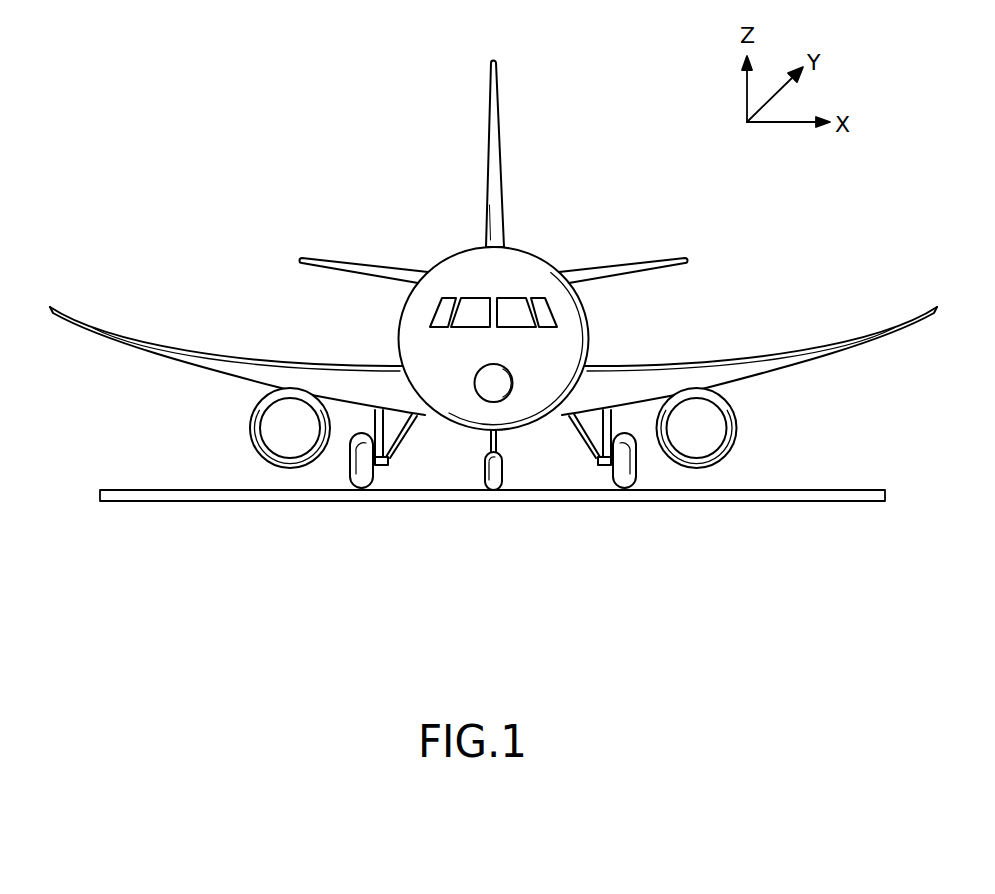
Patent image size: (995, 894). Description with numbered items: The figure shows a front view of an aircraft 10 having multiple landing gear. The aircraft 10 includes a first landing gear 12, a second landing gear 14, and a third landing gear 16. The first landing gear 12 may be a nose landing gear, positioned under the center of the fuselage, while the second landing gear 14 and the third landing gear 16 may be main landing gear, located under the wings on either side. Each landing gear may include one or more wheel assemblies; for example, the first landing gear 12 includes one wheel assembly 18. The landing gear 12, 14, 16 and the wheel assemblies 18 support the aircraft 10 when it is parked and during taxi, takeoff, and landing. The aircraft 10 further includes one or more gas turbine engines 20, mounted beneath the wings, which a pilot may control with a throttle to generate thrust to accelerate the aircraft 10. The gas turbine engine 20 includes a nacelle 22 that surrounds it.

The aircraft 10 is at (340, 162).
The first landing gear 12 is at (497, 457).
The second landing gear 14 is at (340, 474).
The third landing gear 16 is at (605, 448).
The wheel assembly 18 is at (364, 420).
The gas turbine engine 20 is at (751, 463).
The nacelle 22 is at (737, 408).